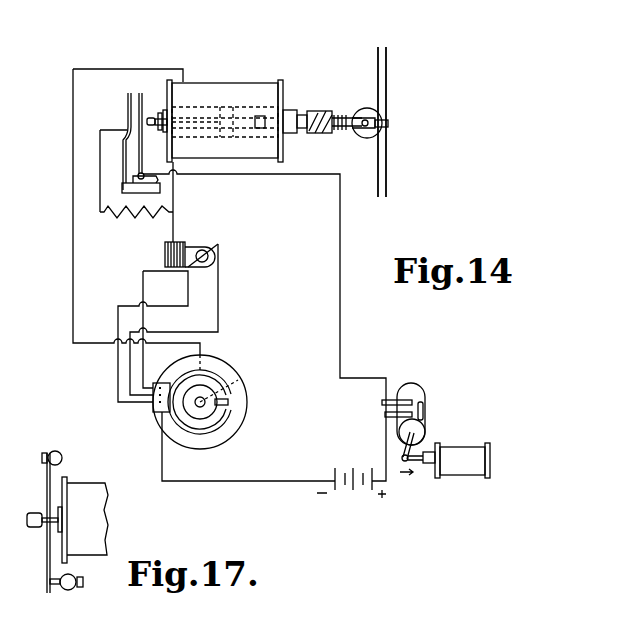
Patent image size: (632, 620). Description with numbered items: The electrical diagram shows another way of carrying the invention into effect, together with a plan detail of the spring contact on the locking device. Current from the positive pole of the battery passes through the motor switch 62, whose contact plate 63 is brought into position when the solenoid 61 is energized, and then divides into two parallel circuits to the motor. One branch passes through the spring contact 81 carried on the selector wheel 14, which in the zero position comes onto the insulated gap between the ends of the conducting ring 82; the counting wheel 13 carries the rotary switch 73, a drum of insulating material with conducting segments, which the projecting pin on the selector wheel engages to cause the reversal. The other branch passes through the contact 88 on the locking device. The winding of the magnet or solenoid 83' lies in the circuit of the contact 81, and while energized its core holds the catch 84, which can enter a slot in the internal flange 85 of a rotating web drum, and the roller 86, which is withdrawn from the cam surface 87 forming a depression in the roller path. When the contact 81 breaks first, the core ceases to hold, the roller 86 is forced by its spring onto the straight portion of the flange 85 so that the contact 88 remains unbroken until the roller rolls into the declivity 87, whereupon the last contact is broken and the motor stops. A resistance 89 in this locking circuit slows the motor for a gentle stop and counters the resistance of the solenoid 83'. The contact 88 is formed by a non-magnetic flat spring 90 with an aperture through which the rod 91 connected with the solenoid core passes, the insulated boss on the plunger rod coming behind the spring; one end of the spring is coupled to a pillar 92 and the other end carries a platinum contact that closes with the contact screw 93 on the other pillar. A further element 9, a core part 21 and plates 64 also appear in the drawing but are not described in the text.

In FIG. 14, the coil 9 is at (195, 247).
In FIG. 14, the counting wheel 13 is at (240, 422).
In FIG. 14, the selector wheel 14 is at (204, 413).
In FIG. 14, the solenoid core 21 is at (195, 118).
In FIG. 14, the solenoid 61 is at (468, 449).
In FIG. 14, the turn over switch 62 is at (417, 386).
In FIG. 14, the contact plate 63 is at (425, 407).
In FIG. 14, the relay plates 64 is at (385, 414).
In FIG. 14, the rotary switch 73 is at (153, 410).
In FIG. 14, the spring contact 81 is at (228, 402).
In FIG. 14, the conducting ring 82 is at (210, 423).
In FIG. 14, the solenoid 83' is at (225, 106).
In FIG. 17, the solenoid 83' is at (102, 520).
In FIG. 14, the catch 84 is at (388, 121).
In FIG. 14, the internal flange 85 is at (388, 72).
In FIG. 14, the roller 86 is at (365, 108).
In FIG. 14, the cam surface 87 is at (375, 134).
In FIG. 14, the contact 88 is at (127, 102).
In FIG. 14, the resistance 89 is at (142, 219).
In FIG. 14, the flat spring 90 is at (152, 113).
In FIG. 17, the flat spring 90 is at (47, 484).
In FIG. 17, the rod 91 is at (55, 523).
In FIG. 17, the pillar 92 is at (74, 437).
In FIG. 17, the contact screw 93 is at (60, 586).